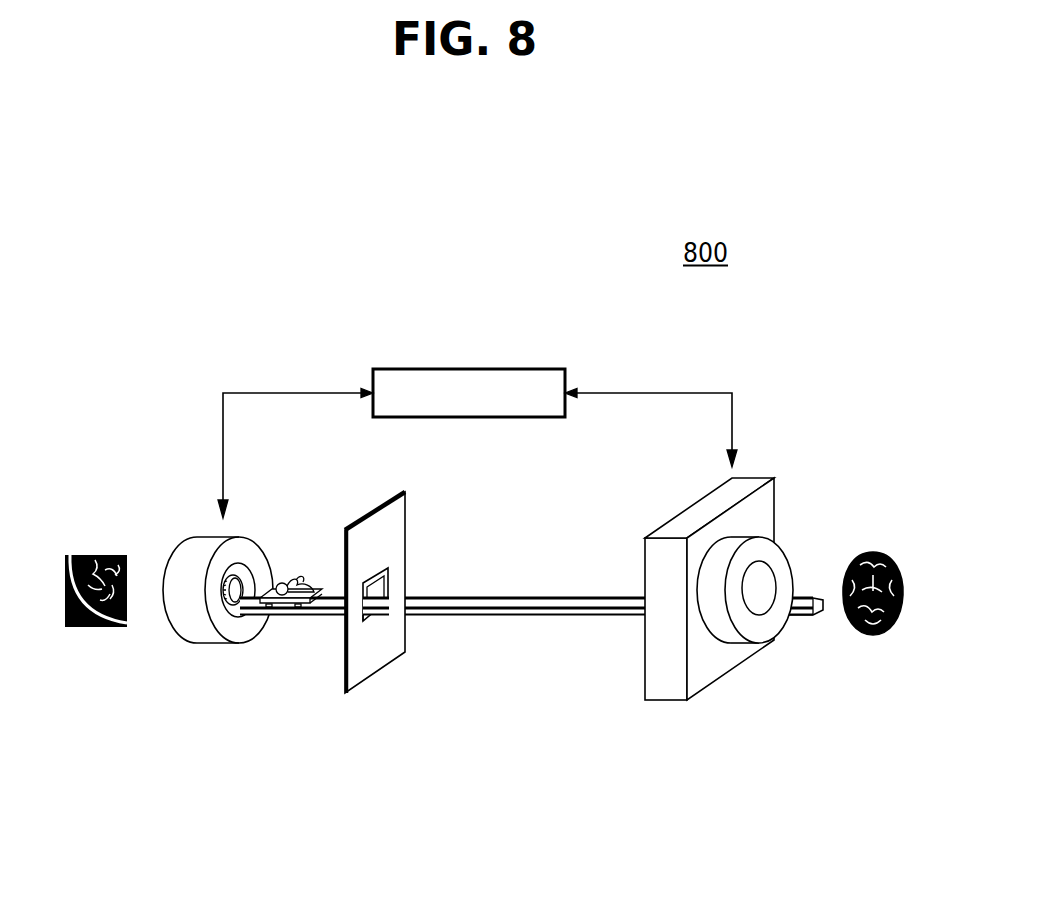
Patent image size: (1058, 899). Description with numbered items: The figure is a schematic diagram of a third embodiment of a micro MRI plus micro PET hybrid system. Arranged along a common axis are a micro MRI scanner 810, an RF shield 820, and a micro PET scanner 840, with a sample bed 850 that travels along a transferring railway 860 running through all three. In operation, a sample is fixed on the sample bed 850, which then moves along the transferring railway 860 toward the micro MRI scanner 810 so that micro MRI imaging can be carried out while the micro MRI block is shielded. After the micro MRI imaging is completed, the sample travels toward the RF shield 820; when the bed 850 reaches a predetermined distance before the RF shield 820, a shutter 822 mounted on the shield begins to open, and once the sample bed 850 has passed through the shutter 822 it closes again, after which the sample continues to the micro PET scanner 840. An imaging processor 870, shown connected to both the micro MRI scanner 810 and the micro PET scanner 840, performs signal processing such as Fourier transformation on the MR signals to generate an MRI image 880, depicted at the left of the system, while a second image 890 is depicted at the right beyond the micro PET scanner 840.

The micro MRI scanner 810 is at (193, 620).
The RF shield 820 is at (373, 653).
The shutter 822 is at (392, 572).
The micro PET scanner 840 is at (715, 662).
The sample bed 850 is at (290, 605).
The transferring railway 860 is at (493, 613).
The imaging processor 870 is at (470, 367).
The MRI image 880 is at (88, 627).
The second image 890 is at (878, 635).